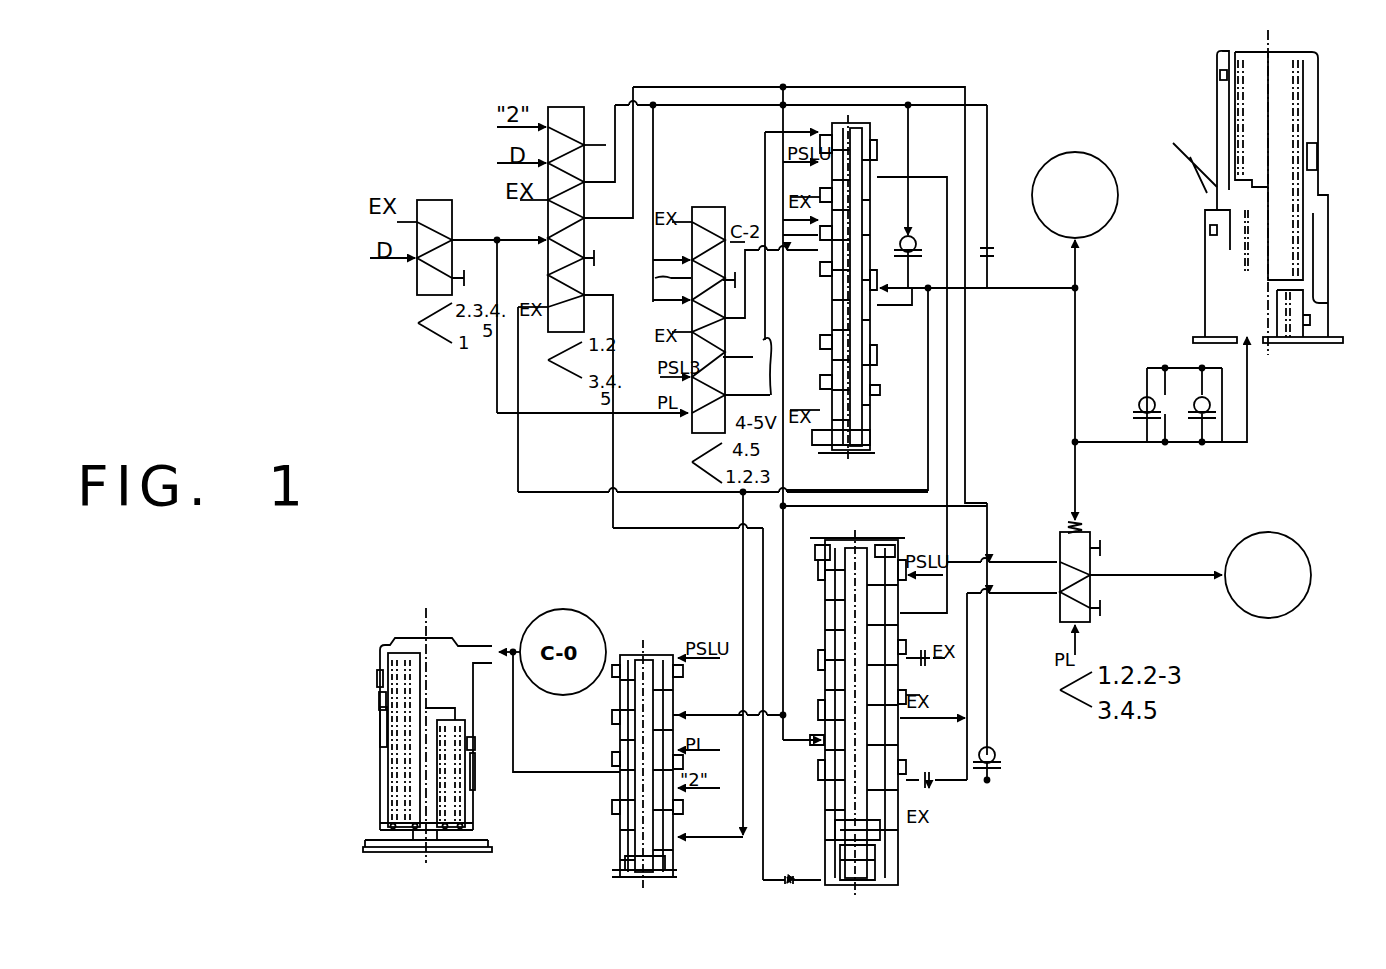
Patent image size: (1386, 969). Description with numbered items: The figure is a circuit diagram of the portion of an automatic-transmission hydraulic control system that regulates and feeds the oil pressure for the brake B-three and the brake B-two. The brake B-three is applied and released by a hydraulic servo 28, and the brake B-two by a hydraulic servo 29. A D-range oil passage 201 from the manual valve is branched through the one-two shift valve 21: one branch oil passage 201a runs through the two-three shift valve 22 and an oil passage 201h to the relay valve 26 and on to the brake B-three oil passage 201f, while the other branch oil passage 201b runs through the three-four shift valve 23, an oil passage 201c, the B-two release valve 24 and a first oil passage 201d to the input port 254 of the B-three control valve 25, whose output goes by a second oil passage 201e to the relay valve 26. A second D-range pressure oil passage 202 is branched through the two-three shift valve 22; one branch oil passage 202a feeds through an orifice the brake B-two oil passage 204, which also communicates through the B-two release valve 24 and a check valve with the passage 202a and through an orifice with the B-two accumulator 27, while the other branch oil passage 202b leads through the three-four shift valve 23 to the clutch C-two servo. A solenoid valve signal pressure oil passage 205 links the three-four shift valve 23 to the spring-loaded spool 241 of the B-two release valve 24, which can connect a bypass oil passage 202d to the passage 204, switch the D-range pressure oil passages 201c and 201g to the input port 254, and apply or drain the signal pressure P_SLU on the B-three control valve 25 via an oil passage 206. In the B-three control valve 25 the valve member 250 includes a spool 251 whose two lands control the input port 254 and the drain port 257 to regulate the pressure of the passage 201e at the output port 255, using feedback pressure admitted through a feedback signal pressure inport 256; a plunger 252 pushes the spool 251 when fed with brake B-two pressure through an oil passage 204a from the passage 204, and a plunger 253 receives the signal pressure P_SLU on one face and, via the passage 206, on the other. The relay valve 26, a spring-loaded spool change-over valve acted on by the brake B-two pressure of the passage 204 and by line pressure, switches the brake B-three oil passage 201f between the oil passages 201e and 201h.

The 1-2 shift valve 21 is at (432, 196).
The 2-3 shift valve 22 is at (574, 105).
The 3-4 shift valve 23 is at (706, 198).
The B-2 release valve 24 is at (856, 116).
The B-3 control valve 25 is at (902, 877).
The relay valve 26 is at (1096, 530).
The B-2 accumulator 27 is at (1208, 93).
The hydraulic servo 28 is at (1310, 552).
The hydraulic servo 29 is at (1095, 152).
The D-range oil passage 201 is at (378, 262).
The branch oil passage 201a is at (513, 238).
The branch oil passage 201b is at (494, 408).
The oil passage 201c is at (711, 282).
The first oil passage 201d is at (780, 590).
The second oil passage 201e is at (1024, 596).
The brake B-3 oil passage 201f is at (1168, 575).
The D-range pressure oil passage 201g is at (794, 102).
The oil passage 201h is at (967, 402).
The D-range pressure oil passage 202 is at (504, 159).
The branch oil passage 202a is at (662, 102).
The branch oil passage 202b is at (655, 122).
The bypass oil passage 202d is at (914, 138).
The brake B-2 oil passage 204 is at (1020, 290).
The oil passage 204a is at (654, 530).
The solenoid valve signal pressure oil passage 205 is at (760, 190).
The oil passage 206 is at (950, 468).
The spring-loaded spool 241 is at (880, 372).
The valve member 250 is at (826, 768).
The spool 251 is at (782, 671).
The plunger 252 is at (883, 830).
The plunger 253 is at (960, 552).
The input port 254 is at (833, 758).
The output port 255 is at (970, 737).
The feedback signal pressure inport 256 is at (961, 801).
The drain port 257 is at (900, 677).